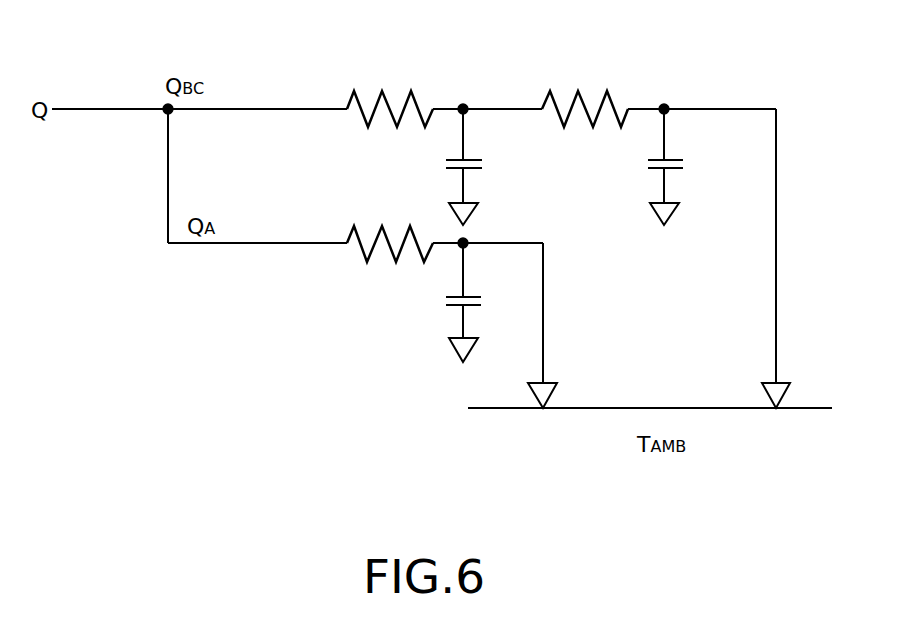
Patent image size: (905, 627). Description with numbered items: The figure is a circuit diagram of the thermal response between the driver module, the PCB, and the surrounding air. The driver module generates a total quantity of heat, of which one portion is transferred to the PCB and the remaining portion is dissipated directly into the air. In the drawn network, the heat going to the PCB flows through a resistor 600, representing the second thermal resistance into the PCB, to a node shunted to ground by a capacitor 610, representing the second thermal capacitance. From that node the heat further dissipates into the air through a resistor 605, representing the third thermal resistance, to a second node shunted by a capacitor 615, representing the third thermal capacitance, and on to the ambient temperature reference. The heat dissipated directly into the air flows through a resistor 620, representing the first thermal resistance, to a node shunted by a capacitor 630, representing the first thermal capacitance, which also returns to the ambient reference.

The thermal resistance (base-collector junction to node) 600 is at (428, 107).
The thermal resistance (node to ambient) 605 is at (614, 104).
The thermal capacitance 610 is at (470, 172).
The thermal capacitance 615 is at (658, 170).
The thermal resistance (ambient node) 620 is at (358, 246).
The thermal capacitance 630 is at (452, 305).